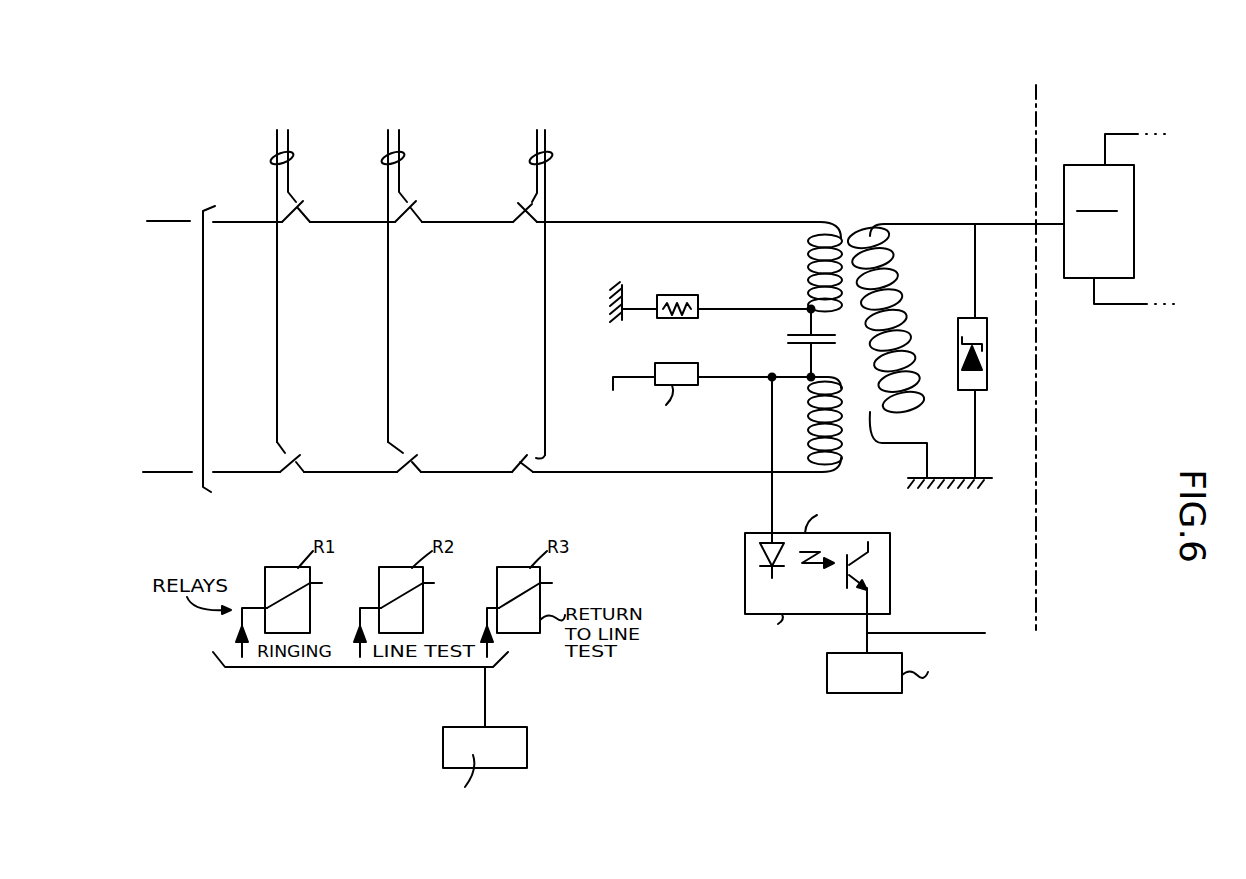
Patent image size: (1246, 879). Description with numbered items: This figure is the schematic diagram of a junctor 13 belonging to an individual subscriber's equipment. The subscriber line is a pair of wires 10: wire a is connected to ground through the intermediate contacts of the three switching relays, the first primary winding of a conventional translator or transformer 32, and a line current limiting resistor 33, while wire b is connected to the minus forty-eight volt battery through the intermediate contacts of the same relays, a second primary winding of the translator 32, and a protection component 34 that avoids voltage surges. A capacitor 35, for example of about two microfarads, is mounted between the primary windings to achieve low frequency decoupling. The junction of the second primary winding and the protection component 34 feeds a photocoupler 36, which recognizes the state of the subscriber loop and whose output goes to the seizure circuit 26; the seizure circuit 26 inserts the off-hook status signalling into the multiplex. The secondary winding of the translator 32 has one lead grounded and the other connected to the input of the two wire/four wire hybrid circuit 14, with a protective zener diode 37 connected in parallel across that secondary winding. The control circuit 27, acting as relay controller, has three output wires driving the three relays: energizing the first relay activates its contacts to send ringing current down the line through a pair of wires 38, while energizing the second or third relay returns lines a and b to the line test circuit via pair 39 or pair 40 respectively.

The pair of wires 10 is at (489, 349).
The junctor 13 is at (737, 142).
The 2 wire/4 wire hybrid circuit 14 is at (1133, 263).
The seizure circuit 26 is at (827, 674).
The control circuit 27 is at (527, 752).
The translator 32 is at (851, 212).
The line current limiting resistor 33 is at (690, 295).
The protection component 34 is at (685, 363).
The capacitor 35 is at (828, 335).
The photocoupler 36 is at (745, 580).
The protective zener diode 37 is at (985, 386).
The pair of wires 38 is at (290, 153).
The pair 39 is at (401, 153).
The pair 40 is at (549, 153).